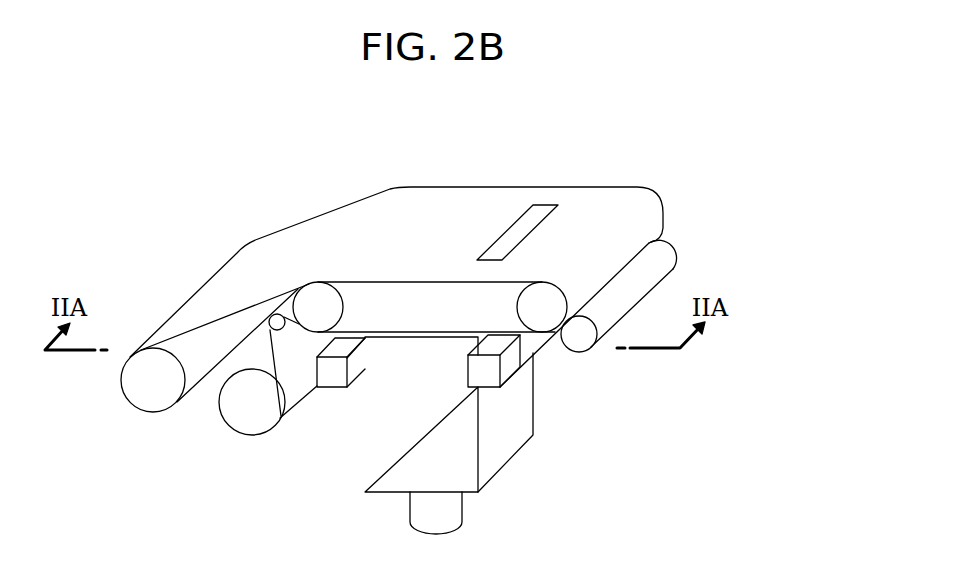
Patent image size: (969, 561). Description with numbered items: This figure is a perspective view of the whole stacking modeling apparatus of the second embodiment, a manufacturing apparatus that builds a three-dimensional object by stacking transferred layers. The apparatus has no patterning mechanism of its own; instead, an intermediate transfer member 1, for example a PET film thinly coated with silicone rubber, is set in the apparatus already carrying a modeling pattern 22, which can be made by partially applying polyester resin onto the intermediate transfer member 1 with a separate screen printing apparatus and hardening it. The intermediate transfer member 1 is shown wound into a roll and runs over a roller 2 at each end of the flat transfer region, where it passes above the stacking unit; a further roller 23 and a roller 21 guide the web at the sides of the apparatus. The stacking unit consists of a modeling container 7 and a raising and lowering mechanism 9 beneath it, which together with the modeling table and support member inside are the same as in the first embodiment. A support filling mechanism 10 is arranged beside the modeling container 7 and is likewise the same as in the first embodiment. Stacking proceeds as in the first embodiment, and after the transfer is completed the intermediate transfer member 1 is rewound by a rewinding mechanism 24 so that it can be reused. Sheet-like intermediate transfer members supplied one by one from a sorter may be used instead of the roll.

The intermediate transfer member 1 is at (447, 205).
The roller 2 is at (315, 295).
The modeling pattern 22 is at (542, 207).
The roller 23 is at (660, 247).
The roller 21 is at (155, 404).
The rewinding mechanism 24 is at (252, 425).
The support filling mechanism 10 is at (333, 380).
The modeling container 7 is at (527, 398).
The raising and lowering mechanism 9 is at (455, 508).